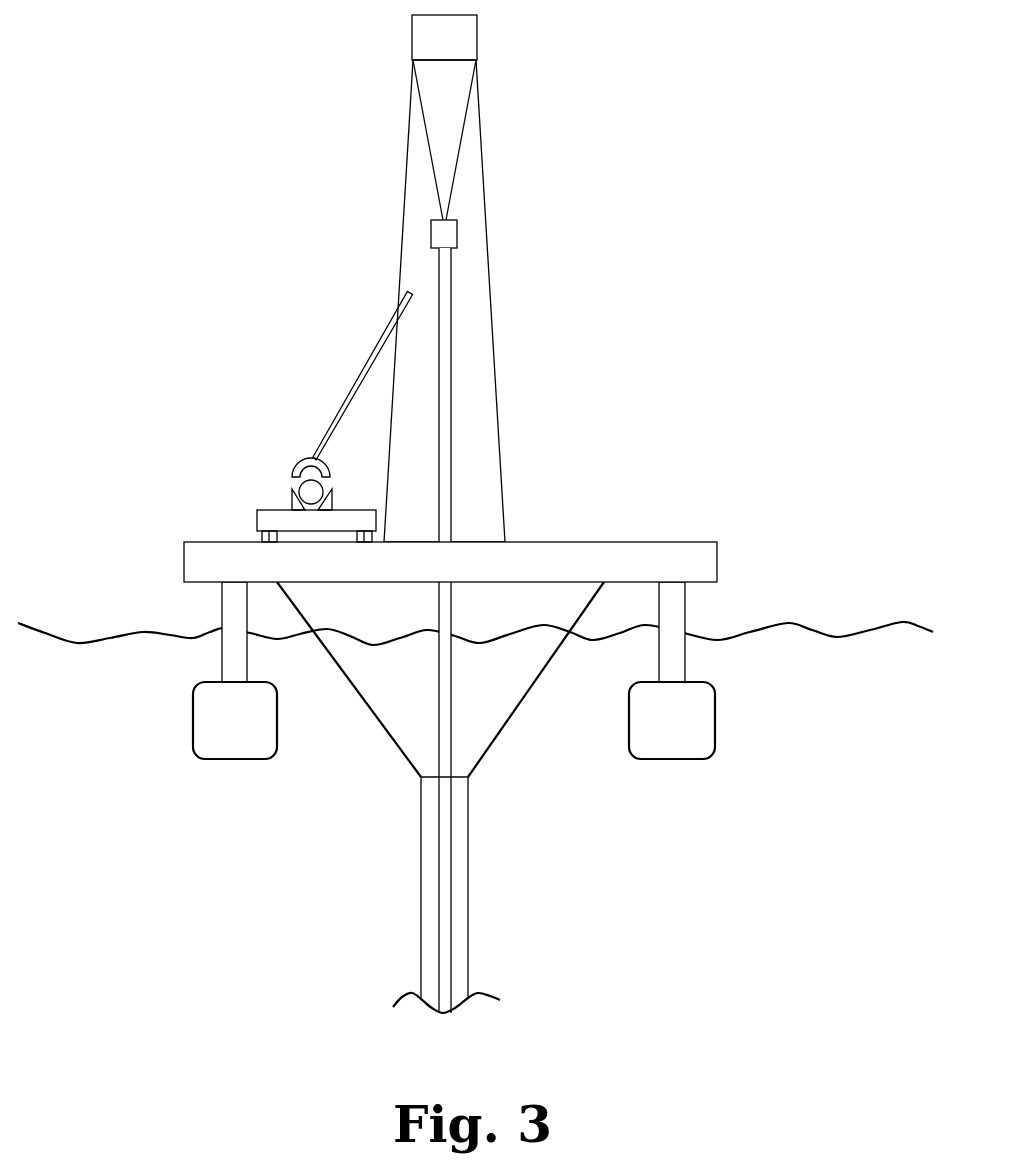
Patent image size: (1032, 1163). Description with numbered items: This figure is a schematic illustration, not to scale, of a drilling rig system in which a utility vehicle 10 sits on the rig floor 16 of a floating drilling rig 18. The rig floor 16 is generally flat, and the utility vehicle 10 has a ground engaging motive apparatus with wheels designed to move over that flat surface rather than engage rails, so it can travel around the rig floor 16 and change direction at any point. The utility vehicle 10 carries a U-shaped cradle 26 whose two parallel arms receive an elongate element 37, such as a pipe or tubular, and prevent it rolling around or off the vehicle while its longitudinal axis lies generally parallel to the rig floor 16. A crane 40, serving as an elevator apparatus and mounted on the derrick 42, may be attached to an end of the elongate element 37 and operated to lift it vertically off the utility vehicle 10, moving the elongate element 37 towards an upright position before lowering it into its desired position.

The utility vehicle 10 is at (257, 510).
The rig floor 16 is at (652, 542).
The drilling rig 18 is at (566, 391).
The U-shaped cradle 26 is at (285, 503).
The elongate element 37 is at (290, 485).
The crane 40 is at (340, 398).
The derrick 42 is at (489, 288).